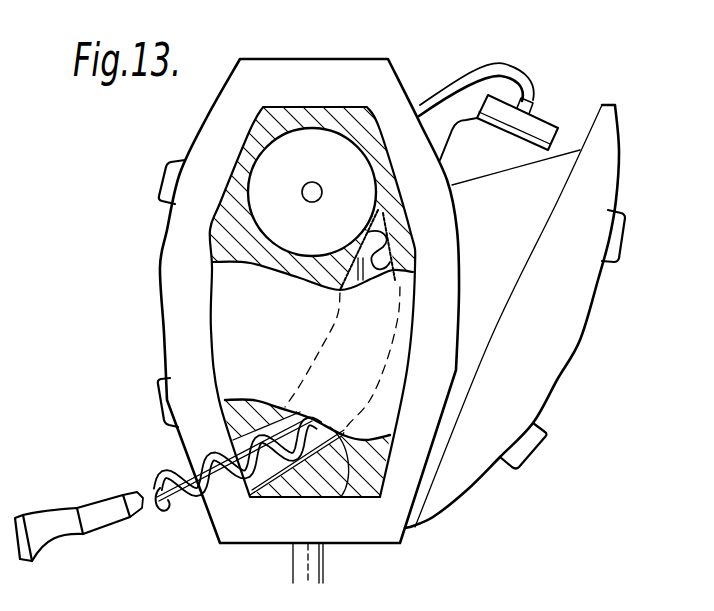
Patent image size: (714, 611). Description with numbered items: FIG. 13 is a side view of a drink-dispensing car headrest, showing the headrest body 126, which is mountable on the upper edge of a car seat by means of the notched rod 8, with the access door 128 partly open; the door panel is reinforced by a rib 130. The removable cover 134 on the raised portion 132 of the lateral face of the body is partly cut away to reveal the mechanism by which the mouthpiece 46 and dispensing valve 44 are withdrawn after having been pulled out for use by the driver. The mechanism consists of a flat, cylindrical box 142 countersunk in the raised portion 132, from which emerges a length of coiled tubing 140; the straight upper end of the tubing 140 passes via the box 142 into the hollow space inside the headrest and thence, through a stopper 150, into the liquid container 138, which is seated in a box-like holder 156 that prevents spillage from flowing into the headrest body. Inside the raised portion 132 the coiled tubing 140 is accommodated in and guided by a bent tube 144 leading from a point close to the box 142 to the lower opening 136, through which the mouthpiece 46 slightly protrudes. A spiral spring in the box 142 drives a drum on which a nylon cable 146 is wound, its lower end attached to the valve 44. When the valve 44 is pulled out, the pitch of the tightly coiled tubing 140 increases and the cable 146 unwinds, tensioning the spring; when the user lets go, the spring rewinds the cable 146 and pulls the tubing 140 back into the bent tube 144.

The notched rod 8 is at (325, 568).
The dispensing valve 44 is at (117, 507).
The mouthpiece 46 is at (53, 523).
The headrest body 126 is at (320, 70).
The access door 128 is at (603, 173).
The rib 130 is at (617, 243).
The raised portion 132 is at (255, 137).
The removable cover 134 is at (226, 257).
The opening 136 is at (258, 477).
The liquid container 138 is at (472, 138).
The coiled tubing 140 is at (492, 65).
The flat cylindrical box 142 is at (267, 215).
The bent tube 144 is at (341, 497).
The nylon cable 146 is at (183, 500).
The stopper 150 is at (537, 128).
The box-like holder 156 is at (562, 165).